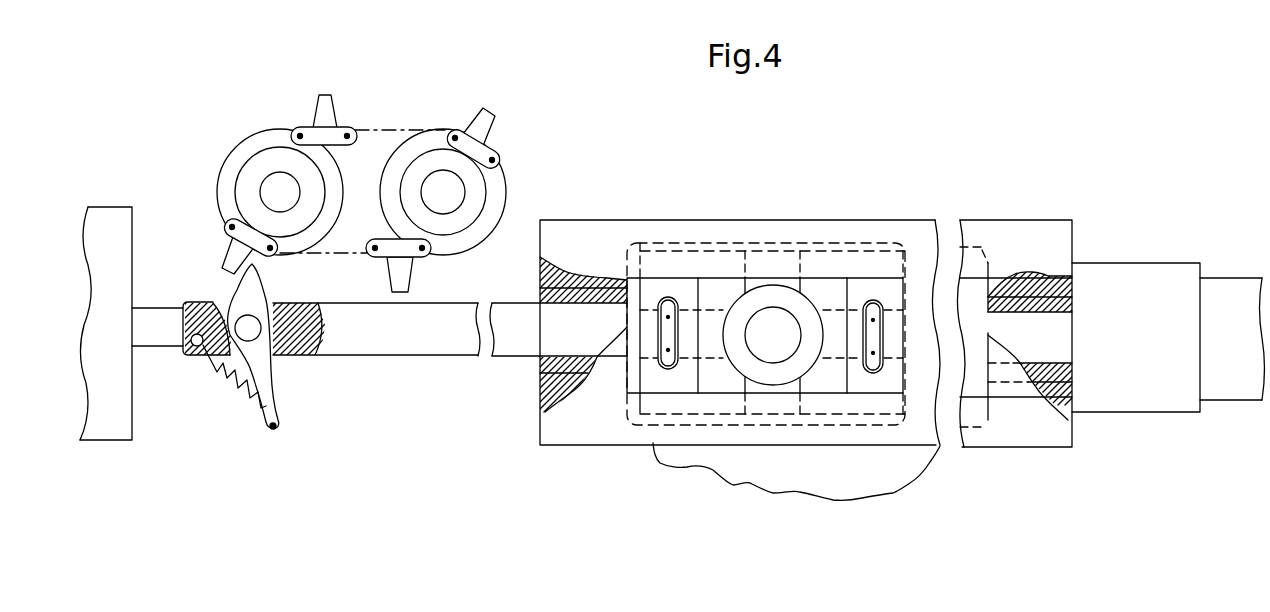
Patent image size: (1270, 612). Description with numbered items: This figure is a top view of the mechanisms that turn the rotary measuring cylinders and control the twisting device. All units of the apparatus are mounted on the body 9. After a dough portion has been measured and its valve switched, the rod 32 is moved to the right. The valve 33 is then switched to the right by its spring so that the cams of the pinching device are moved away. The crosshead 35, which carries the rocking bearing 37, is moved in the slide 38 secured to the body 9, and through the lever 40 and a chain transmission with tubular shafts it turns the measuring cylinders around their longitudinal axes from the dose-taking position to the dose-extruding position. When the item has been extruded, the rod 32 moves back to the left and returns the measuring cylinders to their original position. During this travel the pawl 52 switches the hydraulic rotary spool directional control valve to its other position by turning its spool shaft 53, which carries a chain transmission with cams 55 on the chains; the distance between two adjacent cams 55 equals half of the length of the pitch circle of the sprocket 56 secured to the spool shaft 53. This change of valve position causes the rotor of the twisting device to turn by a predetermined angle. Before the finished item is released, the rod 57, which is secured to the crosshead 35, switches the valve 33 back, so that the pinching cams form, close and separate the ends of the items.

The body 9 is at (763, 467).
The rod 32 is at (1053, 340).
The valve 33 is at (103, 220).
The crosshead 35 is at (867, 288).
The rocking bearing 37 is at (738, 313).
The slide 38 is at (577, 232).
The lever 40 is at (772, 325).
The pawl 52 is at (262, 382).
The spool shaft 53 is at (282, 192).
The cams 55 is at (478, 127).
The sprocket 56 is at (237, 160).
The rod 57 is at (407, 333).